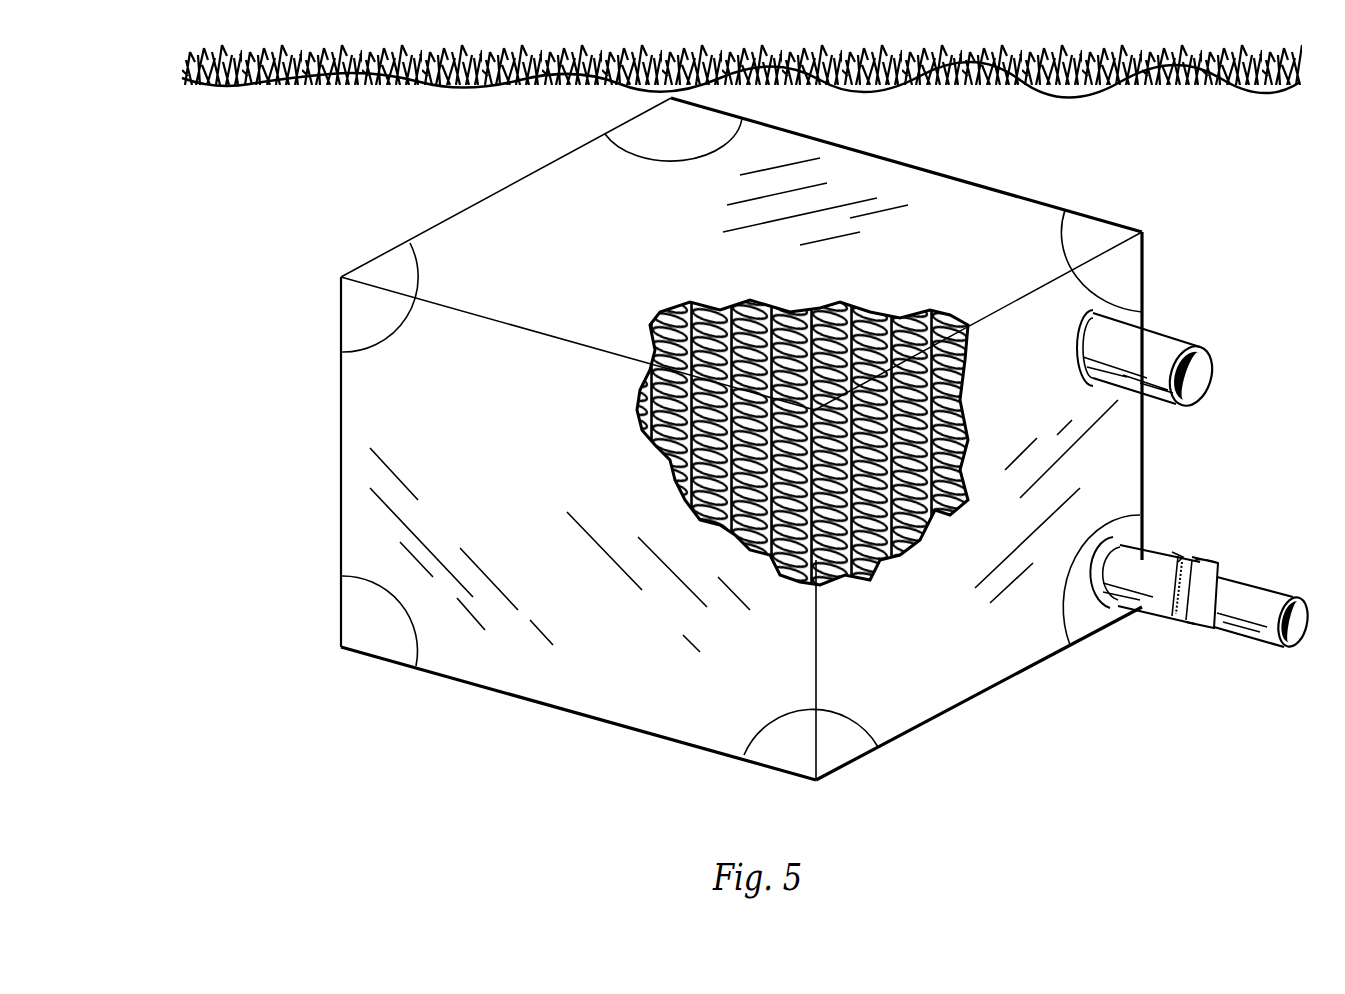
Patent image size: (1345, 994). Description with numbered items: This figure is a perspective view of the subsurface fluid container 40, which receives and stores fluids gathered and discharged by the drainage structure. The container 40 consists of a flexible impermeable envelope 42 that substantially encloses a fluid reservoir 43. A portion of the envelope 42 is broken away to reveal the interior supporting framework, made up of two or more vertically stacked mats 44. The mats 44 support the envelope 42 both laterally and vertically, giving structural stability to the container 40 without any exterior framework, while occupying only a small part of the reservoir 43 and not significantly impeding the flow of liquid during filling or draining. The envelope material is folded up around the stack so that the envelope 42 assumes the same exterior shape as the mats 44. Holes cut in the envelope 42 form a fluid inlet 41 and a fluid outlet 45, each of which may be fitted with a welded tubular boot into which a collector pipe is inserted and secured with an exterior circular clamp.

The subsurface fluid container 40 is at (270, 483).
The fluid inlet 41 is at (1168, 350).
The flexible impermeable envelope 42 is at (970, 257).
The fluid reservoir 43 is at (772, 351).
The stacked mats 44 is at (955, 352).
The fluid outlet 45 is at (1167, 580).